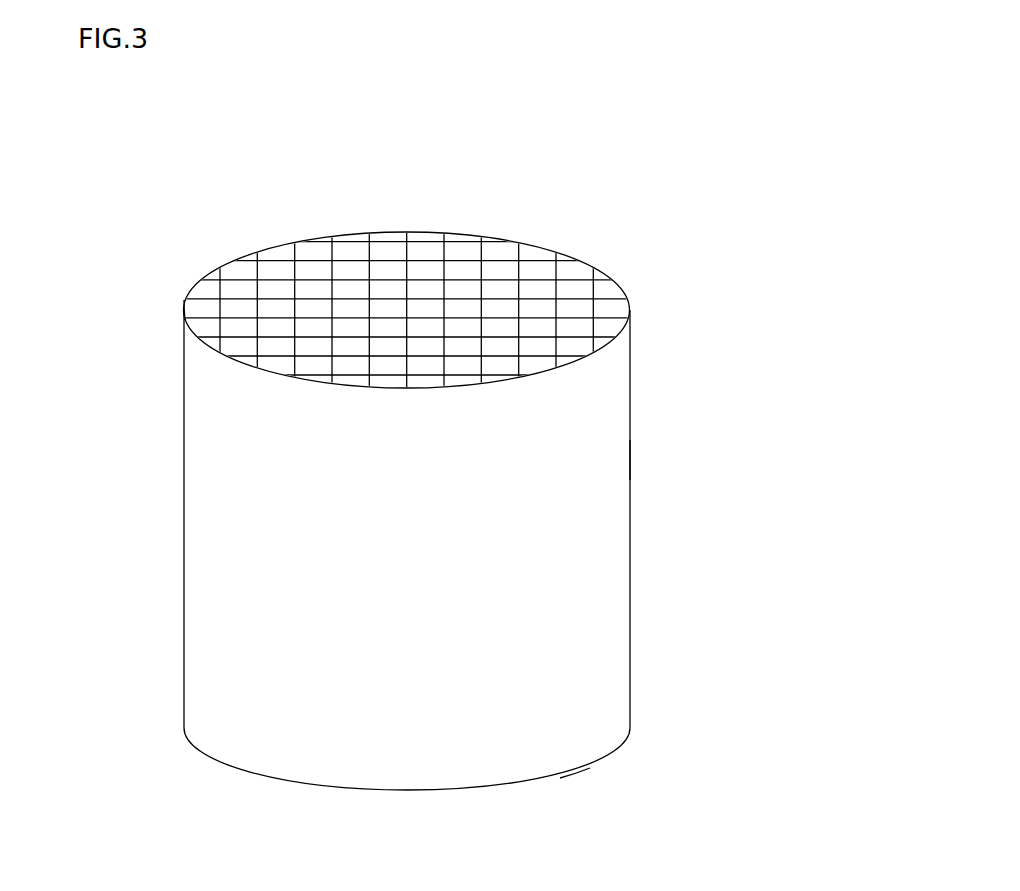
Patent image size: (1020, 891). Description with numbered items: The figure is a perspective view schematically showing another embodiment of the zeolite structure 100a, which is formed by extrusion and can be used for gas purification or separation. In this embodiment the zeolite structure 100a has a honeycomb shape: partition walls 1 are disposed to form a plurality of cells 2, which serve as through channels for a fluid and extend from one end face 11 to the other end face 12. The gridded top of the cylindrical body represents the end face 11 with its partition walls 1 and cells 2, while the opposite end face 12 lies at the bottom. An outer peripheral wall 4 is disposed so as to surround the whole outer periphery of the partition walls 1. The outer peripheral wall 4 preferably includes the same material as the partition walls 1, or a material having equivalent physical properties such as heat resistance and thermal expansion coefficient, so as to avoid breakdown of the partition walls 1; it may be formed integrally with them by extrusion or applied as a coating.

The zeolite structure 100a is at (738, 106).
The partition walls 1 is at (323, 243).
The cells 2 is at (428, 273).
The one end face 11 is at (188, 290).
The outer peripheral wall 4 is at (543, 473).
The the other end face 12 is at (578, 772).